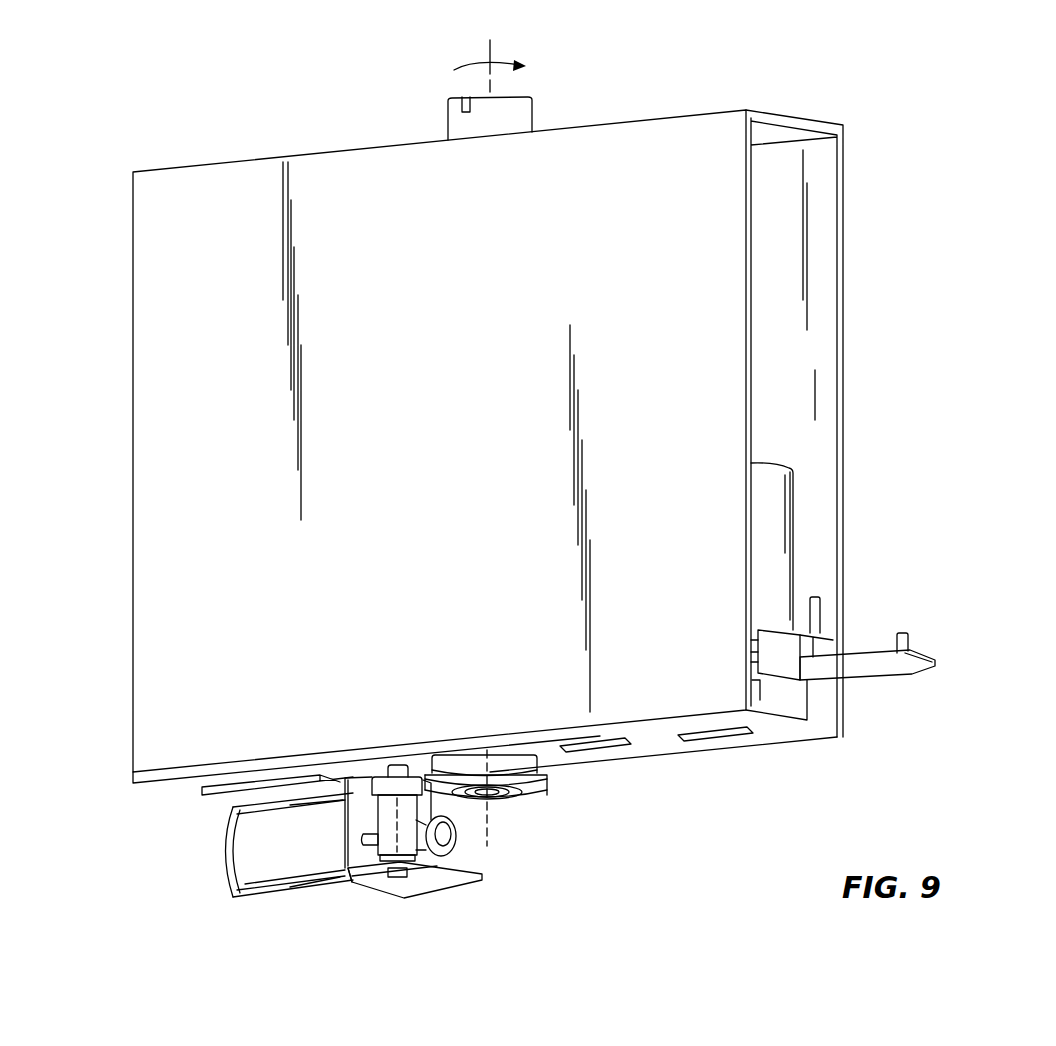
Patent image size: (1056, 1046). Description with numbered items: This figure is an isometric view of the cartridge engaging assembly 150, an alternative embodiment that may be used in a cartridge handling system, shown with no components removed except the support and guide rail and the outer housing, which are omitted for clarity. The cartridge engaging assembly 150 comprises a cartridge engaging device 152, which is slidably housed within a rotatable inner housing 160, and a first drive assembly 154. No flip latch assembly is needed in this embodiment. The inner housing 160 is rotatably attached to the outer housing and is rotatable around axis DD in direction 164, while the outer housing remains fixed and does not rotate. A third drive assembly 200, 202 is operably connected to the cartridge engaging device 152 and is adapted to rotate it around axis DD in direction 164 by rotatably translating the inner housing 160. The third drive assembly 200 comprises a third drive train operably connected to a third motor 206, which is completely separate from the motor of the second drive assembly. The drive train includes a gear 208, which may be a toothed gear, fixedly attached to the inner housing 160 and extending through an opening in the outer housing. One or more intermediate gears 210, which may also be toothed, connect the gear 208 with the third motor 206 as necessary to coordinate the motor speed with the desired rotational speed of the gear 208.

The cartridge engaging assembly 150 is at (940, 124).
The cartridge engaging device 152 is at (878, 565).
The first drive assembly 154 is at (771, 442).
The rotatable inner housing 160 is at (132, 473).
The direction 164 is at (466, 85).
The third drive assembly 200 is at (436, 828).
The drive mechanism 202 is at (600, 818).
The third motor 206 is at (222, 848).
The gear 208 is at (540, 795).
The intermediate gears 210 is at (468, 851).